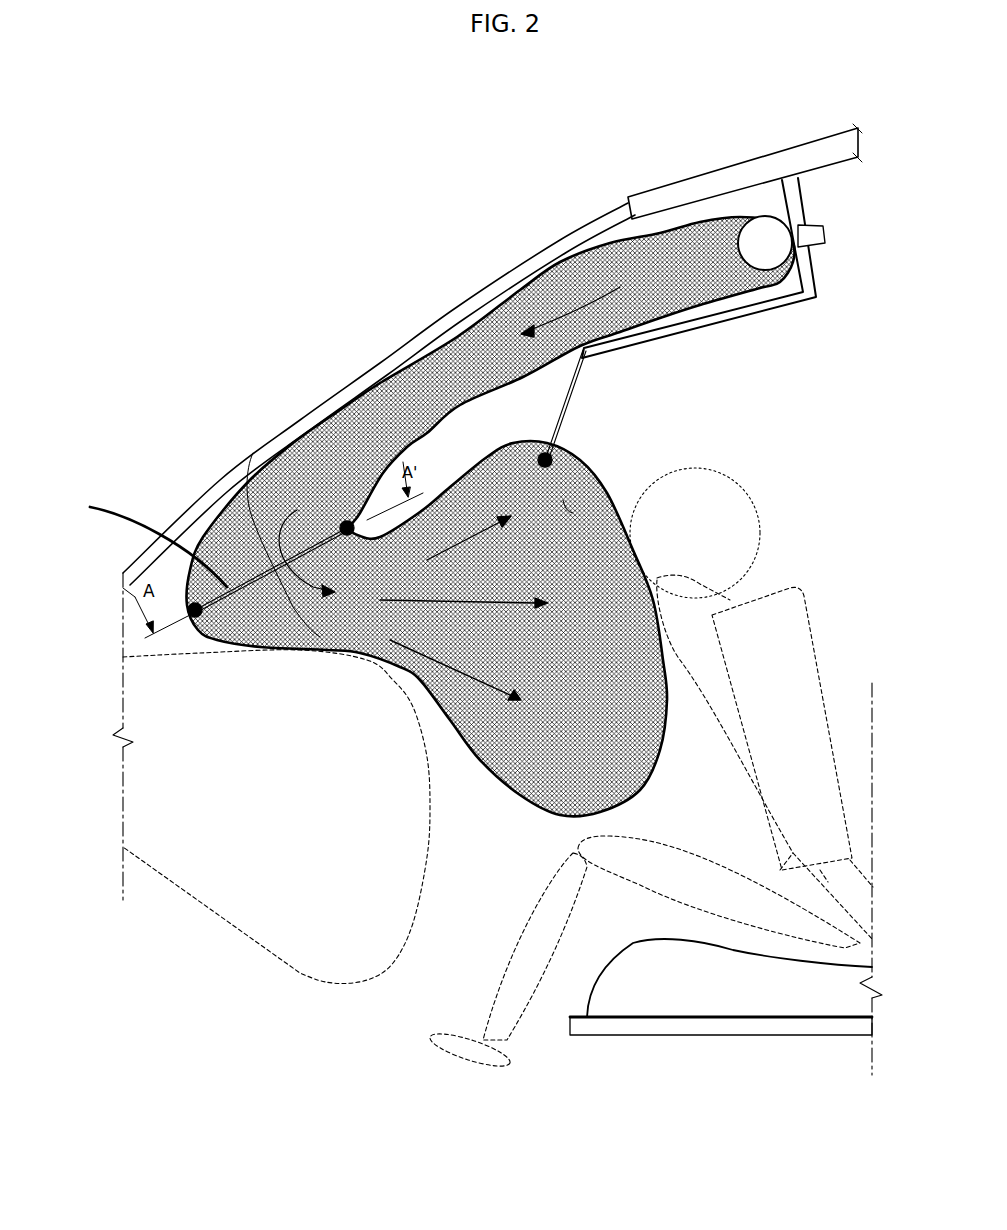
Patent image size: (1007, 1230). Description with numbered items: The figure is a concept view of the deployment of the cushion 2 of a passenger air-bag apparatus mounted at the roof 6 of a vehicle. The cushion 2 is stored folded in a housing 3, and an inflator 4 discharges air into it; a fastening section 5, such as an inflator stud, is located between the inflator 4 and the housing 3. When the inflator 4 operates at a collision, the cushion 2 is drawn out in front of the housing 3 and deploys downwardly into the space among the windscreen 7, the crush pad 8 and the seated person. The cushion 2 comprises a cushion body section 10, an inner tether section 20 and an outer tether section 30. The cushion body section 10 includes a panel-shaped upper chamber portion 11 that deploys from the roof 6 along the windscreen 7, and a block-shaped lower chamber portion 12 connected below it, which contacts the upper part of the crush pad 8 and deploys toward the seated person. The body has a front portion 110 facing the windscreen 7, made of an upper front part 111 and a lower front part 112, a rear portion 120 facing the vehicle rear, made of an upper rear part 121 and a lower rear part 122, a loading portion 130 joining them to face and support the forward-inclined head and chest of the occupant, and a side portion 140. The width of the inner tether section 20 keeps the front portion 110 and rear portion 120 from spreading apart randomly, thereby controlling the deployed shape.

The cushion 2 is at (600, 238).
The housing 3 is at (820, 280).
The inflator 4 is at (762, 240).
The fastening section 5 is at (822, 238).
The roof 6 is at (688, 190).
The windscreen 7 is at (253, 450).
The crush pad 8 is at (240, 860).
The cushion body section 10 is at (723, 400).
The upper chamber portion 11 is at (567, 450).
The lower chamber portion 12 is at (603, 507).
The inner tether section 20 is at (237, 565).
The outer tether section 30 is at (573, 378).
The front portion 110 is at (337, 268).
The upper front part 111 is at (380, 387).
The lower front part 112 is at (306, 480).
The rear portion 120 is at (450, 199).
The upper rear part 121 is at (520, 372).
The lower rear part 122 is at (490, 447).
The loading portion 130 is at (662, 596).
The side portion 140 is at (142, 533).